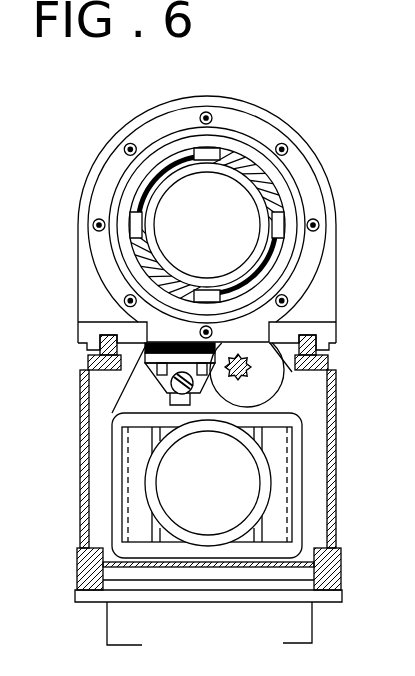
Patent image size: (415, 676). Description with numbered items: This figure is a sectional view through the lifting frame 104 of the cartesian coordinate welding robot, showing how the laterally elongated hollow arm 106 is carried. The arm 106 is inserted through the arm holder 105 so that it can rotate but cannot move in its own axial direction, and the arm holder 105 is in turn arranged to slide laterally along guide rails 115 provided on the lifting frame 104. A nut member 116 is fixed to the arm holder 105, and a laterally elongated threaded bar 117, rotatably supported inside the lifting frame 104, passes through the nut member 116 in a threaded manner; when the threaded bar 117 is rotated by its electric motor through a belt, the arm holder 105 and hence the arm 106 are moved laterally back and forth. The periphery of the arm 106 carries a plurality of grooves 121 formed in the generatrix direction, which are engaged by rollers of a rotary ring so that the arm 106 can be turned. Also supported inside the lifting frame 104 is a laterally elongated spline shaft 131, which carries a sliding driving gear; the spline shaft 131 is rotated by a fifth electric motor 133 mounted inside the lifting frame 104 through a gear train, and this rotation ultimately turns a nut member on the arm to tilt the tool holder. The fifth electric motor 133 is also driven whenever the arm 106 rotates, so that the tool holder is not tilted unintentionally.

The lifting frame 104 is at (80, 462).
The arm holder 105 is at (252, 127).
The arm 106 is at (263, 190).
The guide rails 115 is at (100, 343).
The nut member 116 is at (165, 400).
The threaded bar 117 is at (171, 384).
The grooves 121 is at (216, 300).
The spline shaft 131 is at (251, 375).
The fifth electric motor 133 is at (207, 520).